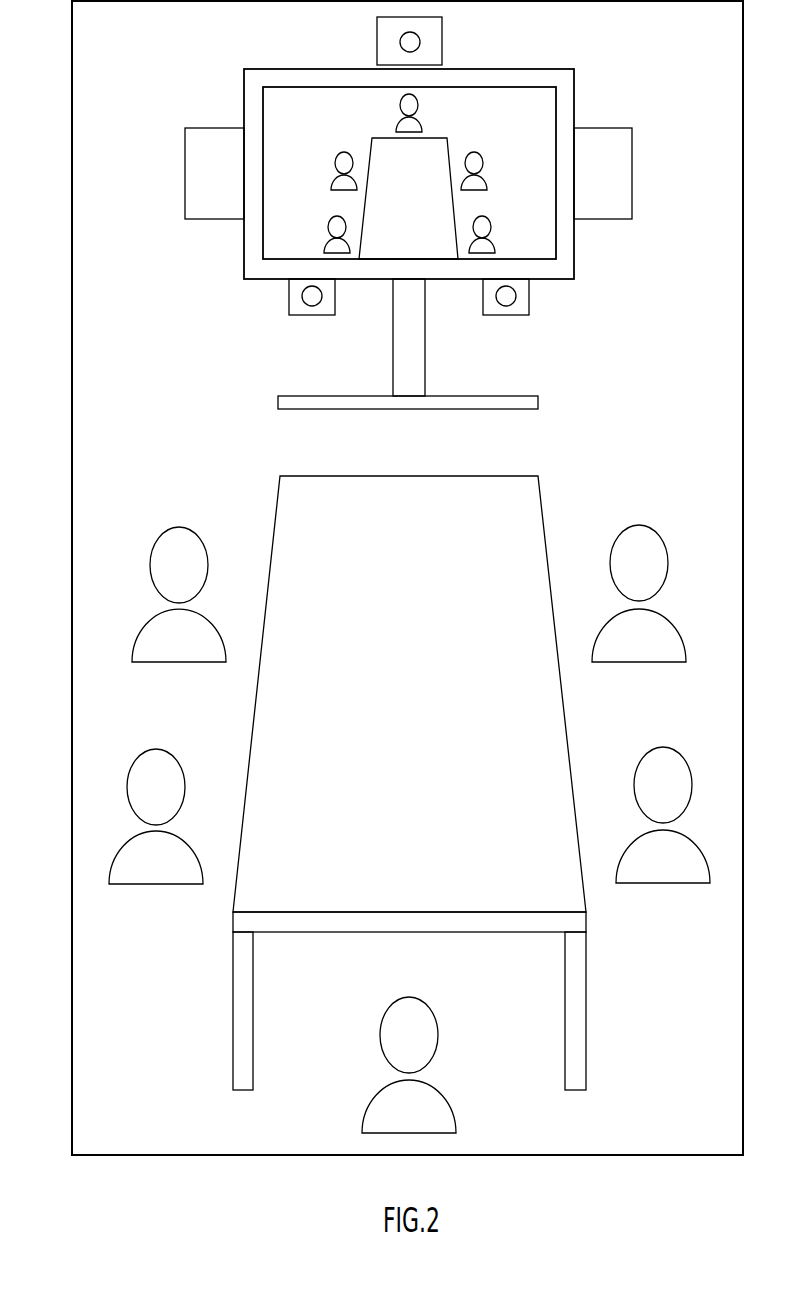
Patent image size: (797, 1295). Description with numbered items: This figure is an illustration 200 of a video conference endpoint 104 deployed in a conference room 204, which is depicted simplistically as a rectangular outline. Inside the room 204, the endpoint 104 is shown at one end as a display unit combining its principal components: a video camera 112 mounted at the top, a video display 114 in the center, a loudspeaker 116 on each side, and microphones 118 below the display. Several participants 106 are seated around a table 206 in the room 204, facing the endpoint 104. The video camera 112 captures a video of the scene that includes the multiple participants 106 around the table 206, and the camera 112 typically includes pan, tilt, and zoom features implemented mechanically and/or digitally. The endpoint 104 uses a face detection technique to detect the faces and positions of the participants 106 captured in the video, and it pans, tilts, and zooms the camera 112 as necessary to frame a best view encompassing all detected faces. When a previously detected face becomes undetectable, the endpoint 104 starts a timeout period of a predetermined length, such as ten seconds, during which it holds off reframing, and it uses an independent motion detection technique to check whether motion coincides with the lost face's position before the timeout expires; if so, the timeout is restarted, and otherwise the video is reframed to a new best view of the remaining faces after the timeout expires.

The conference room environment 200 is at (382, 578).
The conference room 204 is at (710, 51).
The video conference endpoint 104 is at (408, 206).
The video camera 112 is at (377, 45).
The video display 114 is at (505, 115).
The loudspeaker 116 is at (185, 172).
The microphone 118 is at (312, 315).
The participant 106 is at (198, 533).
The table 206 is at (419, 678).